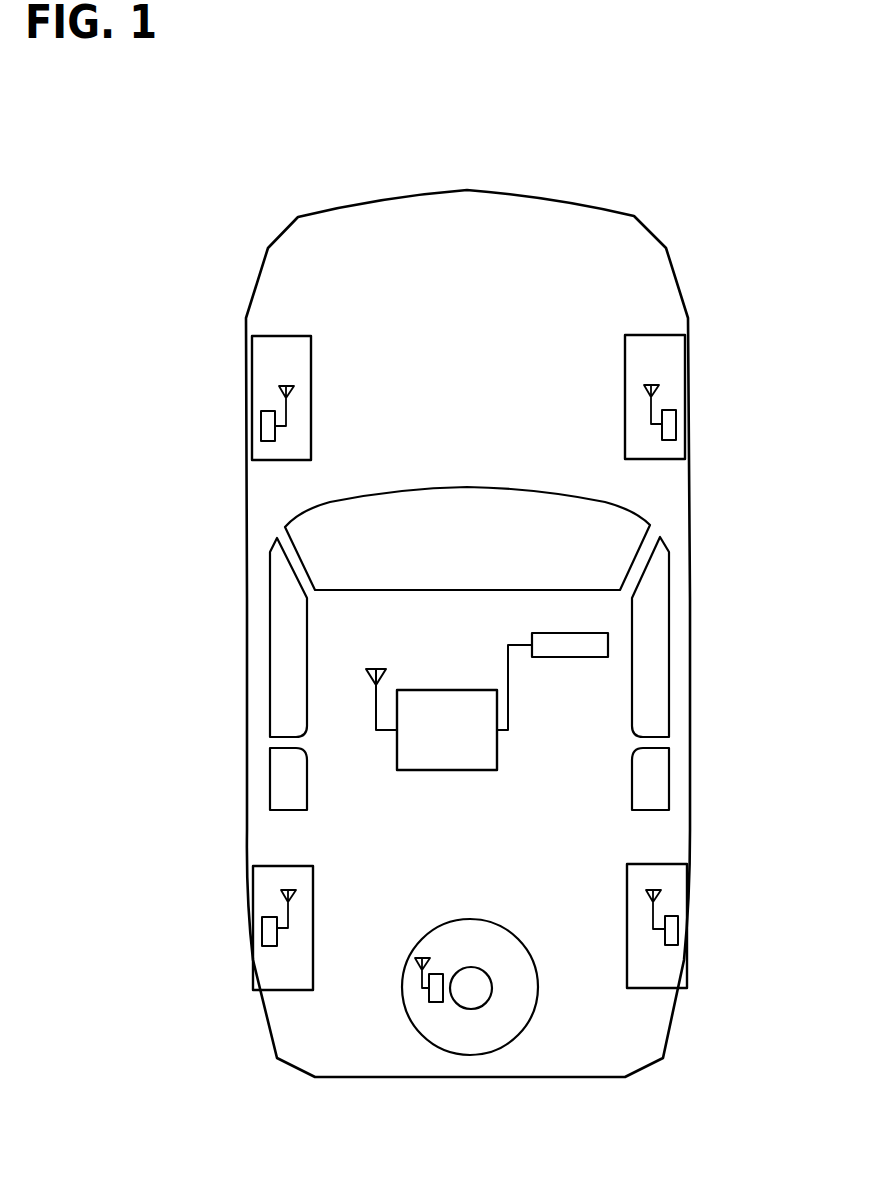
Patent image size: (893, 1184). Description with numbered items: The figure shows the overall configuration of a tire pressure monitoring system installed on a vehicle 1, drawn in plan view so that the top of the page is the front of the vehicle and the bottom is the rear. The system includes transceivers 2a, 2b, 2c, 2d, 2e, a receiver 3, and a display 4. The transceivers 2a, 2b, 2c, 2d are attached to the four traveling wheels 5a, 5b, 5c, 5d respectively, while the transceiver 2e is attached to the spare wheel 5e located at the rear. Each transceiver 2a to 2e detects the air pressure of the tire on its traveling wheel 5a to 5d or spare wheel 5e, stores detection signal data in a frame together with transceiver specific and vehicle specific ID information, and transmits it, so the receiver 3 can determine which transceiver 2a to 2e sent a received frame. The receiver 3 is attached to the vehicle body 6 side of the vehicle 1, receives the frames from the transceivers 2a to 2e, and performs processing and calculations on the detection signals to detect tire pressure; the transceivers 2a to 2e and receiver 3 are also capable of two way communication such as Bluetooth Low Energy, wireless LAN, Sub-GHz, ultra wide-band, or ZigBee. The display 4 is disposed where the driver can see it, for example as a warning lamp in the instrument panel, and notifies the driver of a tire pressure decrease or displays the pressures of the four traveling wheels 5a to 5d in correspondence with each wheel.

The vehicle 1 is at (674, 196).
The transceiver 2a is at (676, 424).
The transceiver 2b is at (262, 426).
The transceiver 2c is at (678, 928).
The transceiver 2d is at (262, 930).
The transceiver 2e is at (436, 1003).
The receiver 3 is at (427, 690).
The display 4 is at (608, 645).
The traveling wheel 5a is at (657, 335).
The traveling wheel 5b is at (288, 336).
The traveling wheel 5c is at (661, 864).
The traveling wheel 5d is at (284, 866).
The spare wheel 5e is at (513, 1043).
The vehicle body 6 is at (657, 235).